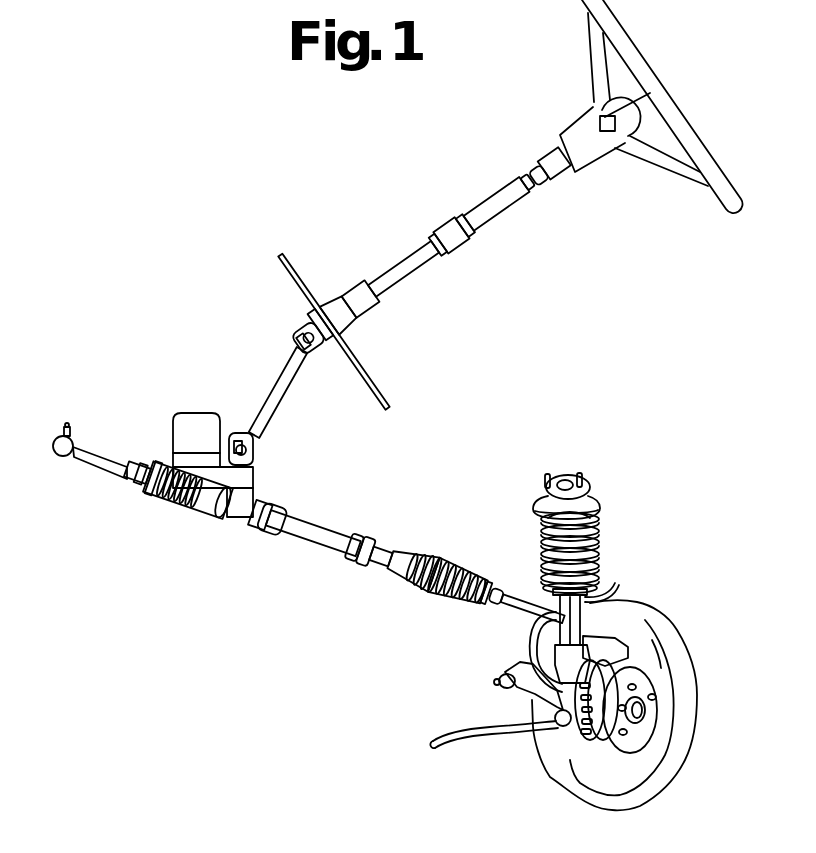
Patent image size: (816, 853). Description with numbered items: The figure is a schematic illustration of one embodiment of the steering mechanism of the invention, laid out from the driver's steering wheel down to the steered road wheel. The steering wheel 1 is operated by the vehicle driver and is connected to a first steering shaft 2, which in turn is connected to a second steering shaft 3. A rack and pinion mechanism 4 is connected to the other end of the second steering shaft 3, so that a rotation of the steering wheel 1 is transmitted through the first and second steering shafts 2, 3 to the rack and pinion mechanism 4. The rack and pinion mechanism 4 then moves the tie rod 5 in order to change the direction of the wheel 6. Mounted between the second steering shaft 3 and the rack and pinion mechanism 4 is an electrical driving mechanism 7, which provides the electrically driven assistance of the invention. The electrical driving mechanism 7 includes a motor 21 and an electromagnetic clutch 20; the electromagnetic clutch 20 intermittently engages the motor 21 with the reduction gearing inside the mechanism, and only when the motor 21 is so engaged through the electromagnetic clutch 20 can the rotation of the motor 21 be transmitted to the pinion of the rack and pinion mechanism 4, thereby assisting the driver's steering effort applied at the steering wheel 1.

The steering wheel 1 is at (650, 71).
The first steering shaft 2 is at (532, 197).
The second steering shaft 3 is at (276, 373).
The rack and pinion mechanism 4 is at (231, 518).
The tie rod 5 is at (98, 470).
The wheel 6 is at (548, 778).
The electrical driving mechanism 7 is at (195, 410).
The electromagnetic clutch 20 is at (171, 460).
The motor 21 is at (172, 420).